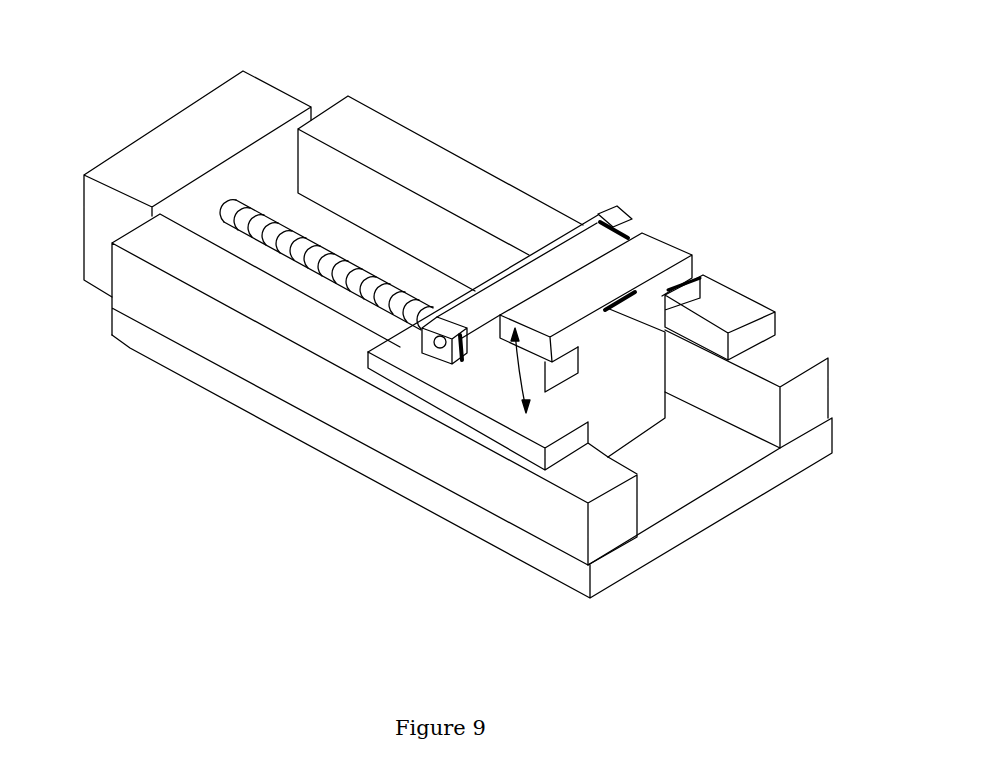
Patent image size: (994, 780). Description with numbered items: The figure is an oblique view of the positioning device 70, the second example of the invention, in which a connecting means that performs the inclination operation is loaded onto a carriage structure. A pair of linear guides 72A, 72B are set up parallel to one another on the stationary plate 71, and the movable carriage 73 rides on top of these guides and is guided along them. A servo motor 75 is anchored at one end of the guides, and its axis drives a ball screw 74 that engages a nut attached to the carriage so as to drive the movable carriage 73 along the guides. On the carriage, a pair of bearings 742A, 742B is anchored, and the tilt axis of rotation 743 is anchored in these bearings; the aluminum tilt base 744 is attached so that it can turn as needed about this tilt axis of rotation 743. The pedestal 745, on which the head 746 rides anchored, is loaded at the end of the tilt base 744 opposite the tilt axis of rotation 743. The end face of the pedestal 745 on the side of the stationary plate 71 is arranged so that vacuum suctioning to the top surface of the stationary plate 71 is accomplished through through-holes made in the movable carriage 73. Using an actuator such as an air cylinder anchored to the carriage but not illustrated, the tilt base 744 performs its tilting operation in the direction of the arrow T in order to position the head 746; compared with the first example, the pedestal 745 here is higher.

The positioning device 70 is at (307, 39).
The stationary plate 71 is at (253, 400).
The linear guide 72A is at (225, 278).
The linear guide 72B is at (395, 147).
The movable carriage 73 is at (723, 308).
The ball screw 74 is at (356, 270).
The servo motor 75 is at (190, 135).
The bearing 742A is at (460, 367).
The bearing 742B is at (627, 223).
The tilt axis of rotation 743 is at (440, 345).
The tilt base 744 is at (520, 255).
The pedestal 745 is at (637, 257).
The head 746 is at (640, 312).
The arrow indicating tilting direction T is at (525, 415).